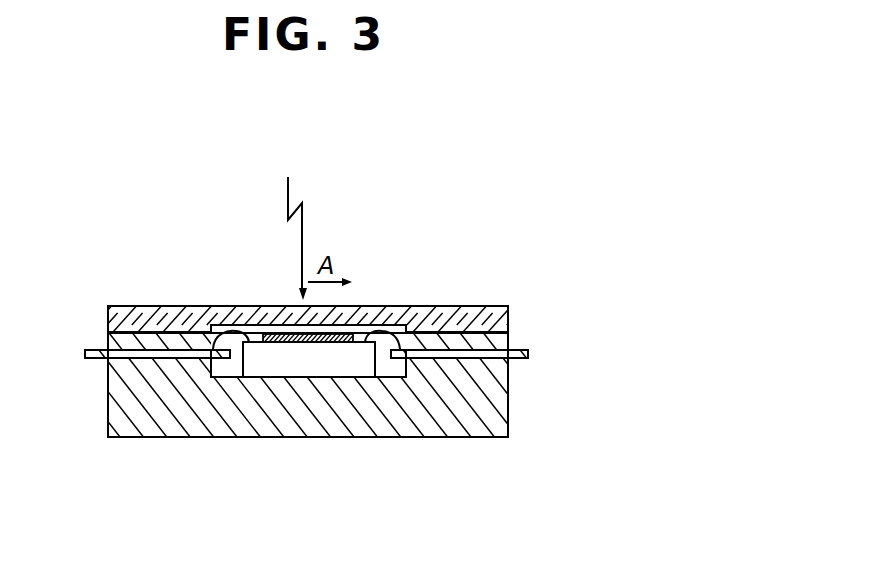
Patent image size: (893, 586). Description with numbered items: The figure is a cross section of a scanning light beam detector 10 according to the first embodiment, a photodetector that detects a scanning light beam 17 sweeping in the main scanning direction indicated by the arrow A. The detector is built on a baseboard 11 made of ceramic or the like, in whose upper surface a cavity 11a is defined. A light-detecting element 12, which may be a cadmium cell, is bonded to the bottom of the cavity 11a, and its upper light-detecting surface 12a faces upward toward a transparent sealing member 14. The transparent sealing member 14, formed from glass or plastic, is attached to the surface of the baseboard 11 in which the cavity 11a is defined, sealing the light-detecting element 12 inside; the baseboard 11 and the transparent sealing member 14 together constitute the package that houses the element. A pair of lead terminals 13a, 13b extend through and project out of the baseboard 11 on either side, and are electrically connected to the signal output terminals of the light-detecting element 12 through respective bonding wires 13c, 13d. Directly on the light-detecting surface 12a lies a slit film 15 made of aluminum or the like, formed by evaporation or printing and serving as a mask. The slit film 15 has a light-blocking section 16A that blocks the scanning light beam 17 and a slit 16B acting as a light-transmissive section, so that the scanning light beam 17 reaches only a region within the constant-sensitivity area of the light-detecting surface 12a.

The scanning light beam detector 10 is at (514, 305).
The baseboard 11 is at (455, 425).
The cavity 11a is at (232, 368).
The light-detecting element 12 is at (355, 363).
The light-detecting surface 12a is at (283, 342).
The lead terminal 13a is at (95, 359).
The lead terminal 13b is at (523, 360).
The bonding wire 13c is at (218, 326).
The bonding wire 13d is at (403, 332).
The transparent sealing member 14 is at (150, 306).
The slit film 15 is at (356, 330).
The light-blocking section 16A is at (380, 329).
The slit 16B is at (314, 330).
The scanning light beam 17 is at (302, 238).